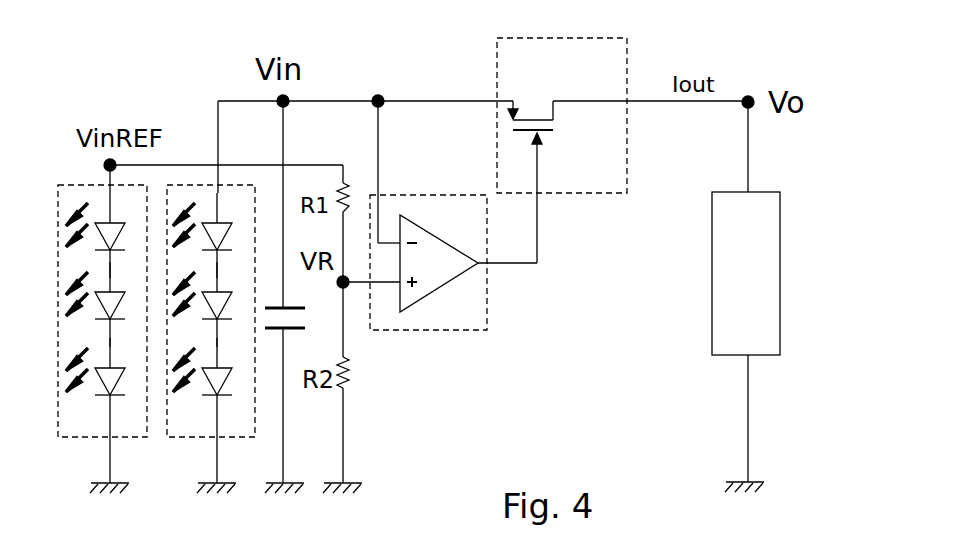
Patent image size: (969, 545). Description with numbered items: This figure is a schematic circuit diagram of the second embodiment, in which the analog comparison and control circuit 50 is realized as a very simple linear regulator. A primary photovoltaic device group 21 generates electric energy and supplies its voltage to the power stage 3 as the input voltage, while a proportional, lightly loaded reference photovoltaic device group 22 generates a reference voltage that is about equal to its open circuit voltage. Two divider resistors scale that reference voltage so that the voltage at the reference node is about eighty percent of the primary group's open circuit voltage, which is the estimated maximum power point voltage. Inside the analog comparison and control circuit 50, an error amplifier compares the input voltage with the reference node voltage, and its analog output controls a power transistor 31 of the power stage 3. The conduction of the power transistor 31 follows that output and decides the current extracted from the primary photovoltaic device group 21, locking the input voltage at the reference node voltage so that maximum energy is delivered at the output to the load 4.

The primary photovoltaic device group 21 is at (208, 185).
The reference photovoltaic device group 22 is at (130, 437).
The power transistor 31 is at (527, 107).
The power stage 3 is at (567, 153).
The analog comparison and control circuit 50 is at (432, 330).
The load 4 is at (765, 355).